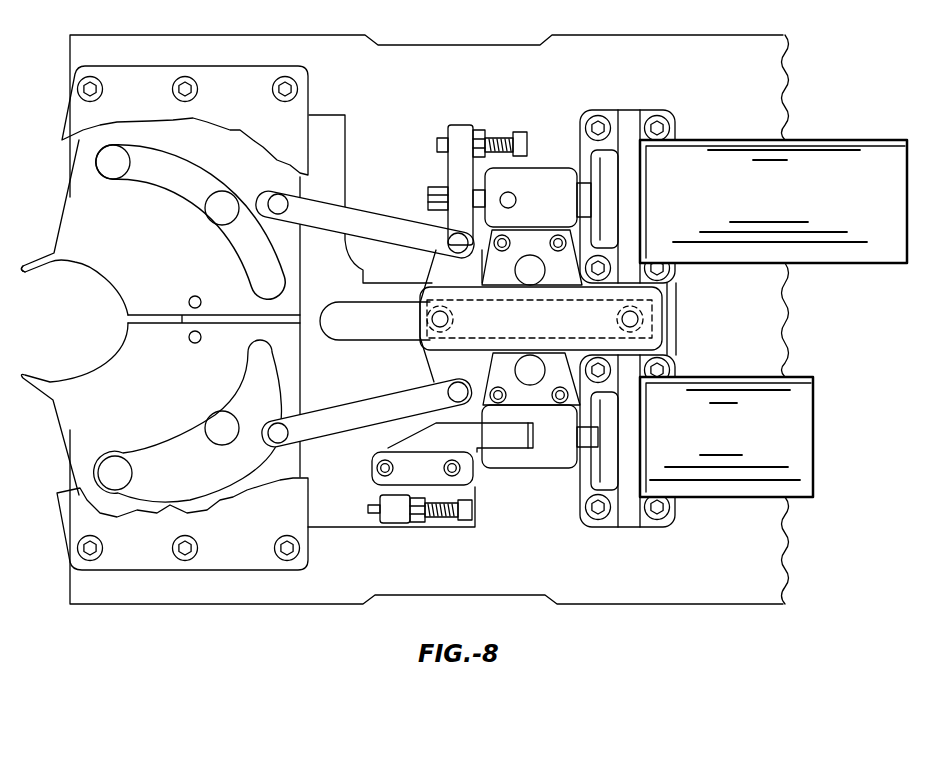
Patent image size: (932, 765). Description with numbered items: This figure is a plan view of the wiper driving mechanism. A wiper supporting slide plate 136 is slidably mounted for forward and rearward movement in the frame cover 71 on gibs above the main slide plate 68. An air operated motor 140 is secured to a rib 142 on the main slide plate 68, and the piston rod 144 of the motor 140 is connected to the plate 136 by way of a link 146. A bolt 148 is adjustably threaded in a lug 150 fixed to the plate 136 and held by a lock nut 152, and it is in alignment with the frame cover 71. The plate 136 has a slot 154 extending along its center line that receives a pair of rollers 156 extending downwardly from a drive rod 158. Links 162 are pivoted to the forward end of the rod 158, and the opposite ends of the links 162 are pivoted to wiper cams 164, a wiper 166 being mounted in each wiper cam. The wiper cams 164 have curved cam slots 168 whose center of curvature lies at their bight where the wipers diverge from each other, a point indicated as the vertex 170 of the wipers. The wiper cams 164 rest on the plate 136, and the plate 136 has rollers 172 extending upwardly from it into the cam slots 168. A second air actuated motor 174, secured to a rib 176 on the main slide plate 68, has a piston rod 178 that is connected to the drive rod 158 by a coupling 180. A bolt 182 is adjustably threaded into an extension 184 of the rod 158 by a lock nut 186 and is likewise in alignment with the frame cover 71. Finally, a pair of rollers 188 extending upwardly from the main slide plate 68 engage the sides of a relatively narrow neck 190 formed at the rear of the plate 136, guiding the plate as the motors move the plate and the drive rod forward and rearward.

The main slide plate 68 is at (305, 585).
The frame cover 71 is at (243, 76).
The wiper supporting slide plate 136 is at (321, 130).
The air operated motor 140 is at (795, 417).
The rib 142 is at (628, 503).
The piston rod 144 is at (547, 457).
The link 146 is at (423, 437).
The bolt 148 is at (448, 513).
The lug 150 is at (388, 515).
The lock nut 152 is at (413, 517).
The slot 154 is at (372, 328).
The rollers 156 is at (448, 318).
The drive rod 158 is at (445, 280).
The links 162 is at (380, 222).
The wiper cams 164 is at (78, 218).
The wiper 166 is at (48, 263).
The curved cam slots 168 is at (170, 177).
The vertex of the wipers 170 is at (117, 317).
The rollers 172 is at (117, 470).
The air actuated motor 174 is at (860, 157).
The rib 176 is at (627, 127).
The piston rod 178 is at (577, 200).
The coupling 180 is at (542, 180).
The bolt 182 is at (498, 133).
The extension 184 is at (450, 130).
The lock nut 186 is at (478, 130).
The rollers 188 is at (533, 270).
The neck 190 is at (677, 308).